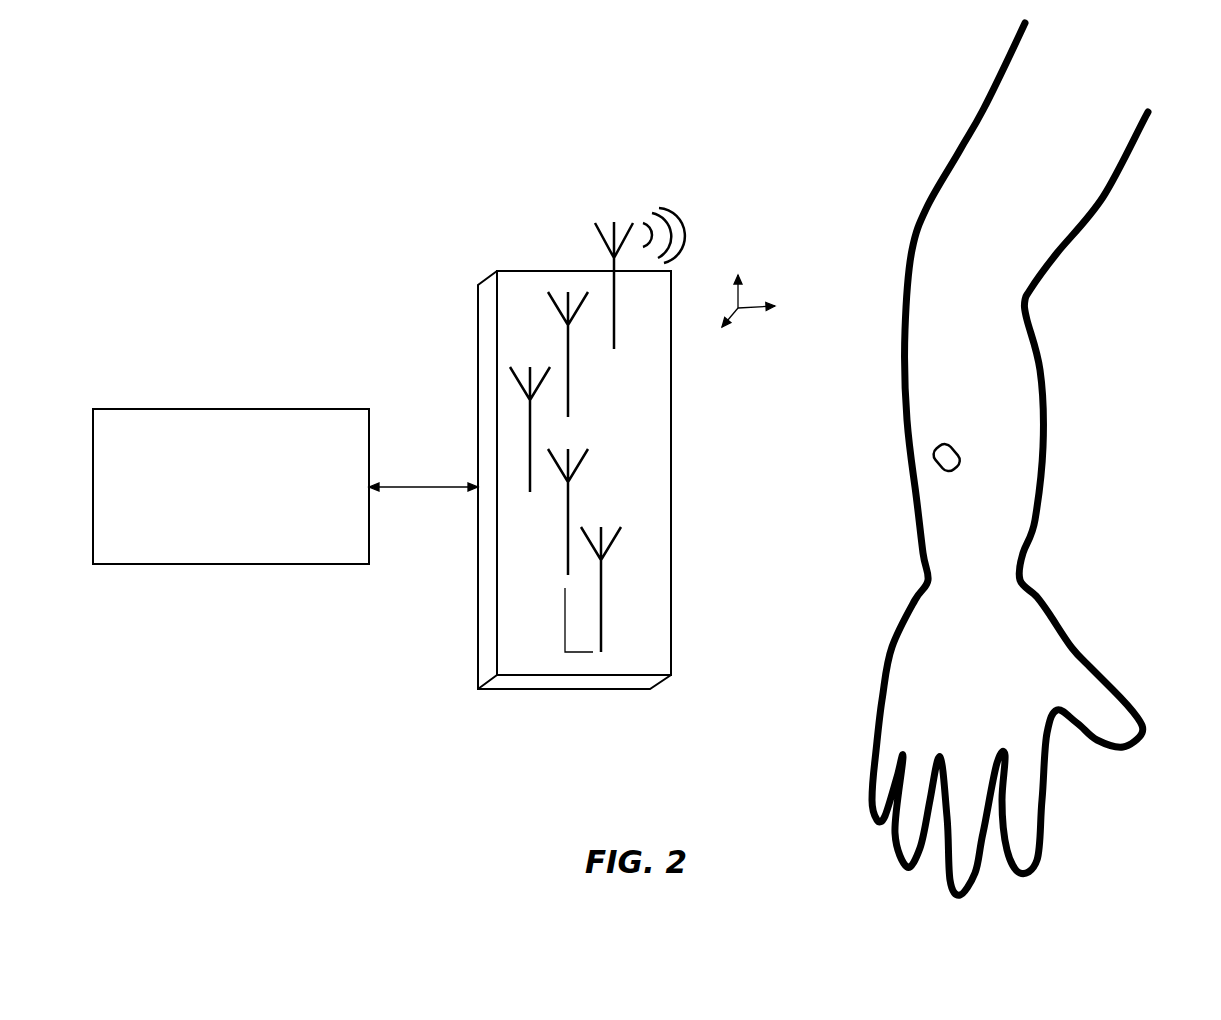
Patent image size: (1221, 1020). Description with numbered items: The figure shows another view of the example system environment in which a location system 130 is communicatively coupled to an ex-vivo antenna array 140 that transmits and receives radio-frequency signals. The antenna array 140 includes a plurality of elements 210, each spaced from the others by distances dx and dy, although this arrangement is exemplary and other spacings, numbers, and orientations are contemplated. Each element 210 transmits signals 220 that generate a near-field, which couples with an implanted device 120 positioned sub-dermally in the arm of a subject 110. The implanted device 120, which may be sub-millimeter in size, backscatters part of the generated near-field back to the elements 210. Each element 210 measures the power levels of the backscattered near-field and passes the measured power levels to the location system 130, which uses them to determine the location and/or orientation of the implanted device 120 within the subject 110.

The subject 110 is at (957, 117).
The implanted device 120 is at (945, 432).
The location system 130 is at (285, 486).
The antenna array 140 is at (506, 238).
The element 210 is at (614, 204).
The signal 220 is at (669, 196).